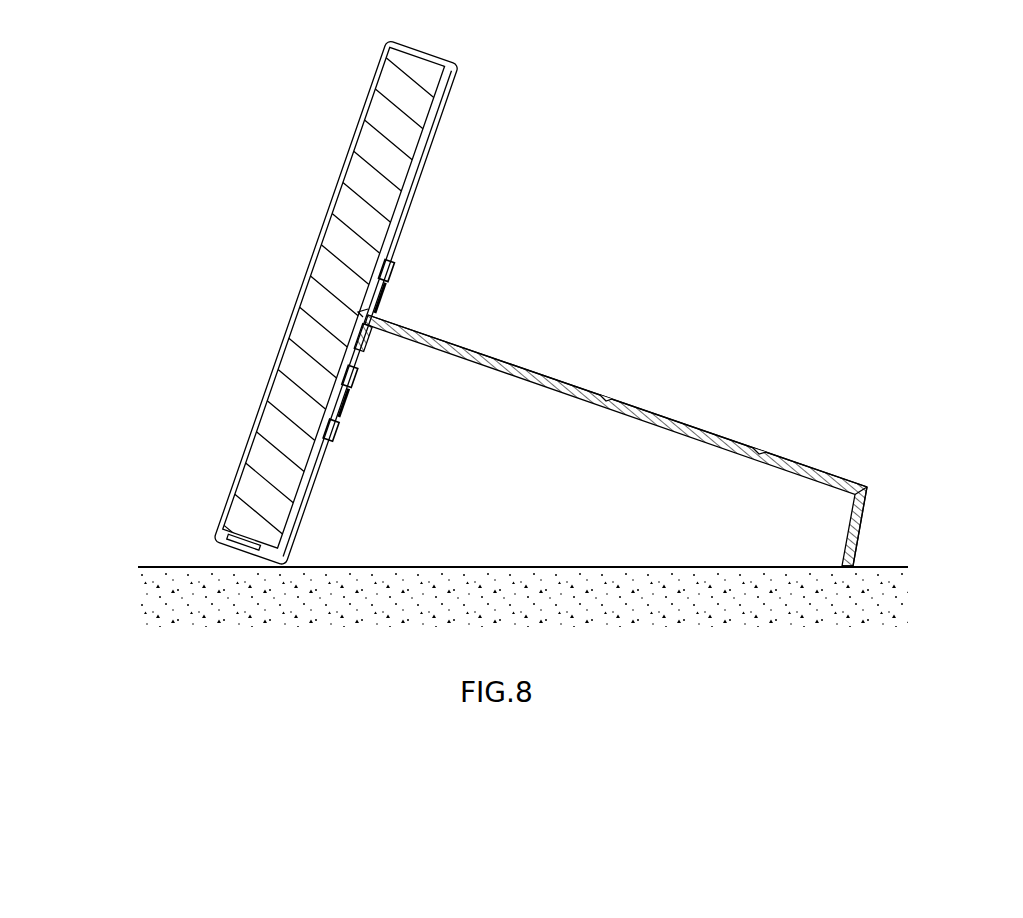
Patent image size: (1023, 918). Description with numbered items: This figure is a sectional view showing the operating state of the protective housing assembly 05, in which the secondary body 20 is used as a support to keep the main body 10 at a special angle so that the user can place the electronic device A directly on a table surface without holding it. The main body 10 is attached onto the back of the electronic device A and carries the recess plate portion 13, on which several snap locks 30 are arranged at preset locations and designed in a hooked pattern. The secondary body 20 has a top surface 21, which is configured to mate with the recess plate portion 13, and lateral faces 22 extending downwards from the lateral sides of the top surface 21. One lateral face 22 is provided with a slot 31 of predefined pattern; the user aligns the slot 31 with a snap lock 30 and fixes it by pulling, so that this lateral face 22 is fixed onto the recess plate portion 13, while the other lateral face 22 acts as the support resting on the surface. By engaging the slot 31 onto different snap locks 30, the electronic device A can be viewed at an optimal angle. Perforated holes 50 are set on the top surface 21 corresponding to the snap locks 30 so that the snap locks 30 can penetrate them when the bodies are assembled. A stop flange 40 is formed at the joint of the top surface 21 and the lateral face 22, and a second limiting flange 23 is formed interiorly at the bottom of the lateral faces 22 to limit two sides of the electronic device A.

The main body 10 is at (445, 188).
The electronic device A is at (333, 198).
The recess plate portion 13 is at (404, 214).
The snap lock 30 is at (394, 278).
The slot 31 is at (362, 350).
The lateral face 22 is at (345, 328).
The secondary body 20 is at (686, 407).
The top surface 21 is at (621, 400).
The perforated hole 50 is at (603, 390).
The stop flange 40 is at (860, 499).
The second limiting flange 23 is at (843, 560).
The protective housing assembly 05 is at (638, 282).